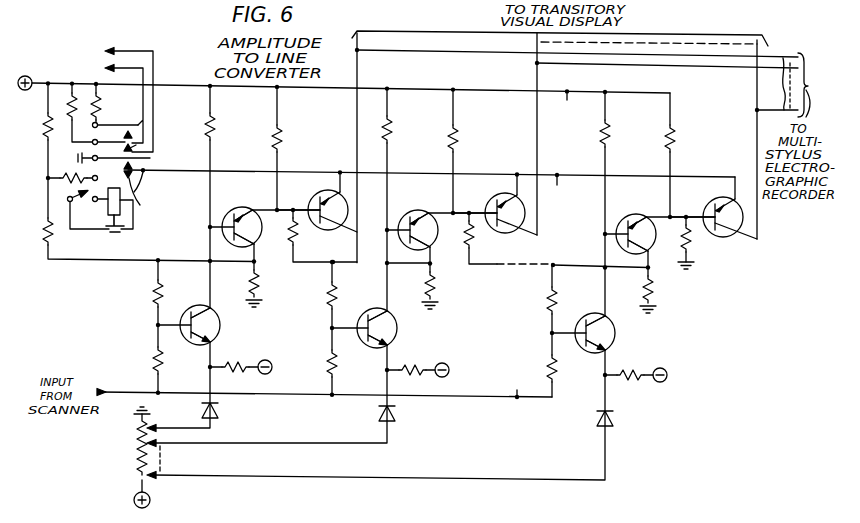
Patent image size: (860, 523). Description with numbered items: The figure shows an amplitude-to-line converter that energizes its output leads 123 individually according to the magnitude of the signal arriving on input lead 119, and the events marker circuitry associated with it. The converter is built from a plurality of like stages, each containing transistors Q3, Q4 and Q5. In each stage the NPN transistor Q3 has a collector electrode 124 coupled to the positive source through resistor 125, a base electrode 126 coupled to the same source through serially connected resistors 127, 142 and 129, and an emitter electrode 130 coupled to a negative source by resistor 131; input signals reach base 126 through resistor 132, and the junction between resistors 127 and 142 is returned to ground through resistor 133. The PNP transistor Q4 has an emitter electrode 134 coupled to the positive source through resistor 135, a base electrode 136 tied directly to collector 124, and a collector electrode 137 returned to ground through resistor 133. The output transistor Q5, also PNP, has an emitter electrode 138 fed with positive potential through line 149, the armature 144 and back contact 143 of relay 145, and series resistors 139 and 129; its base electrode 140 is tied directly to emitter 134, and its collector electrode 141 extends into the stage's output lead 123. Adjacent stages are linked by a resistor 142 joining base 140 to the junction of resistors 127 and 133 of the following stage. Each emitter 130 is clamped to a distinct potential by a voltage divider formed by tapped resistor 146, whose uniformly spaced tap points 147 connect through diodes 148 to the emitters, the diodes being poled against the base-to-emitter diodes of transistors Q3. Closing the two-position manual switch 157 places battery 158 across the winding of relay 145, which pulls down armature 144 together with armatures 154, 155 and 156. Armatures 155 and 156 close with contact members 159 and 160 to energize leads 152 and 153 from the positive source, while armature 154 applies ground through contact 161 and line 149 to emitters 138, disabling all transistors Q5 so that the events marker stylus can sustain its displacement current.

The input lead 119 is at (124, 388).
The output lead 123 is at (786, 85).
The collector electrode 124 is at (210, 315).
The resistor 125 is at (214, 126).
The base electrode 126 is at (178, 312).
The resistor 127 is at (155, 293).
The resistor 129 is at (45, 125).
The emitter electrode 130 is at (198, 345).
The resistor 131 is at (232, 370).
The resistor 132 is at (154, 358).
The resistor 133 is at (251, 285).
The emitter electrode 134 is at (245, 214).
The resistor 135 is at (281, 135).
The base electrode 136 is at (233, 220).
The collector electrode 137 is at (242, 249).
The emitter electrode 138 is at (340, 195).
The resistor 139 is at (46, 178).
The base electrode 140 is at (319, 222).
The collector electrode 141 is at (336, 224).
The resistor 142 is at (47, 243).
The contact 143 is at (141, 184).
The armature 144 is at (140, 200).
The relay 145 is at (108, 205).
The tapped resistor 146 is at (138, 452).
The tap points 147 is at (186, 440).
The diodes 148 is at (215, 408).
The line 149 is at (222, 170).
The lead 152 is at (143, 66).
The lead 153 is at (118, 50).
The armature 154 is at (150, 162).
The armature 155 is at (140, 144).
The armature 156 is at (115, 124).
The two-position manual switch 157 is at (65, 196).
The battery 158 is at (116, 231).
The contact member 159 is at (144, 154).
The contact member 160 is at (144, 133).
The contact 161 is at (145, 172).
The transistor Q3 is at (216, 338).
The transistor Q4 is at (447, 237).
The transistor Q5 is at (349, 213).